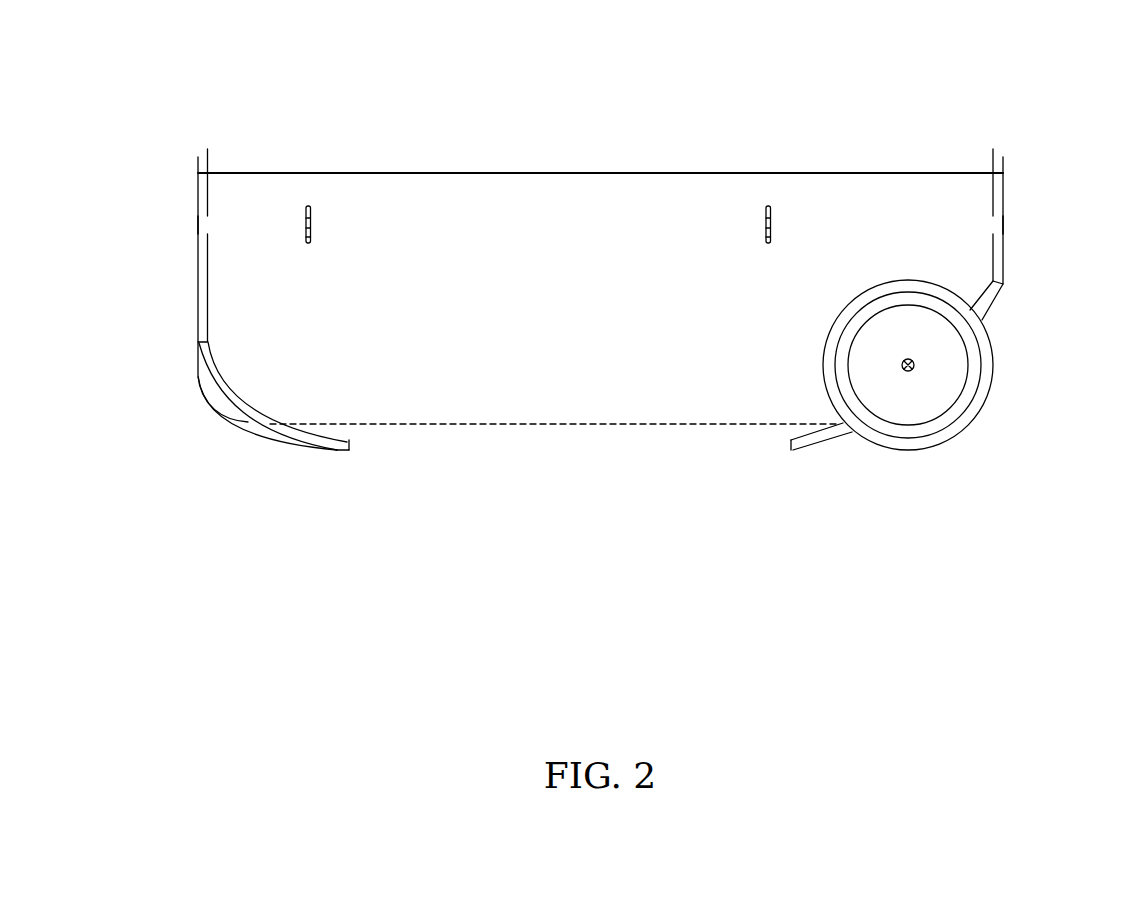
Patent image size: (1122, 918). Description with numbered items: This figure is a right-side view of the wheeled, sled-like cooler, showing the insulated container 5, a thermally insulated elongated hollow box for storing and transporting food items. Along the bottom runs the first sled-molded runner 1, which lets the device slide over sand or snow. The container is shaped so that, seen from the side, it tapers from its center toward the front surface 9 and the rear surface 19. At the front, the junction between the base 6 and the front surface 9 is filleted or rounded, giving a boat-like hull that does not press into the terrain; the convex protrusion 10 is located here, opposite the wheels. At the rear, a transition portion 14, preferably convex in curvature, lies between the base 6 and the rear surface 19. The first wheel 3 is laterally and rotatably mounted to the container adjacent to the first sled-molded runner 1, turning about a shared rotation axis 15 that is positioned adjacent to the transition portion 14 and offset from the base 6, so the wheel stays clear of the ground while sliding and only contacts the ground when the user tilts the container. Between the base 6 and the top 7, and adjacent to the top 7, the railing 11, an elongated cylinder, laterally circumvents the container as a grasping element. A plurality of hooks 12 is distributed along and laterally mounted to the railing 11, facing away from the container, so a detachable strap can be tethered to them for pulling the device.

The first sled-molded runner 1 is at (600, 438).
The first wheel 3 is at (990, 376).
The insulated container 5 is at (591, 312).
The base 6 is at (344, 471).
The top 7 is at (395, 143).
The front surface 9 is at (196, 282).
The convex protrusion 10 is at (206, 419).
The railing 11 is at (435, 227).
The plurality of hooks 12 is at (308, 246).
The transition portion 14 is at (844, 440).
The shared rotation axis 15 is at (915, 366).
The rear surface 19 is at (1007, 264).